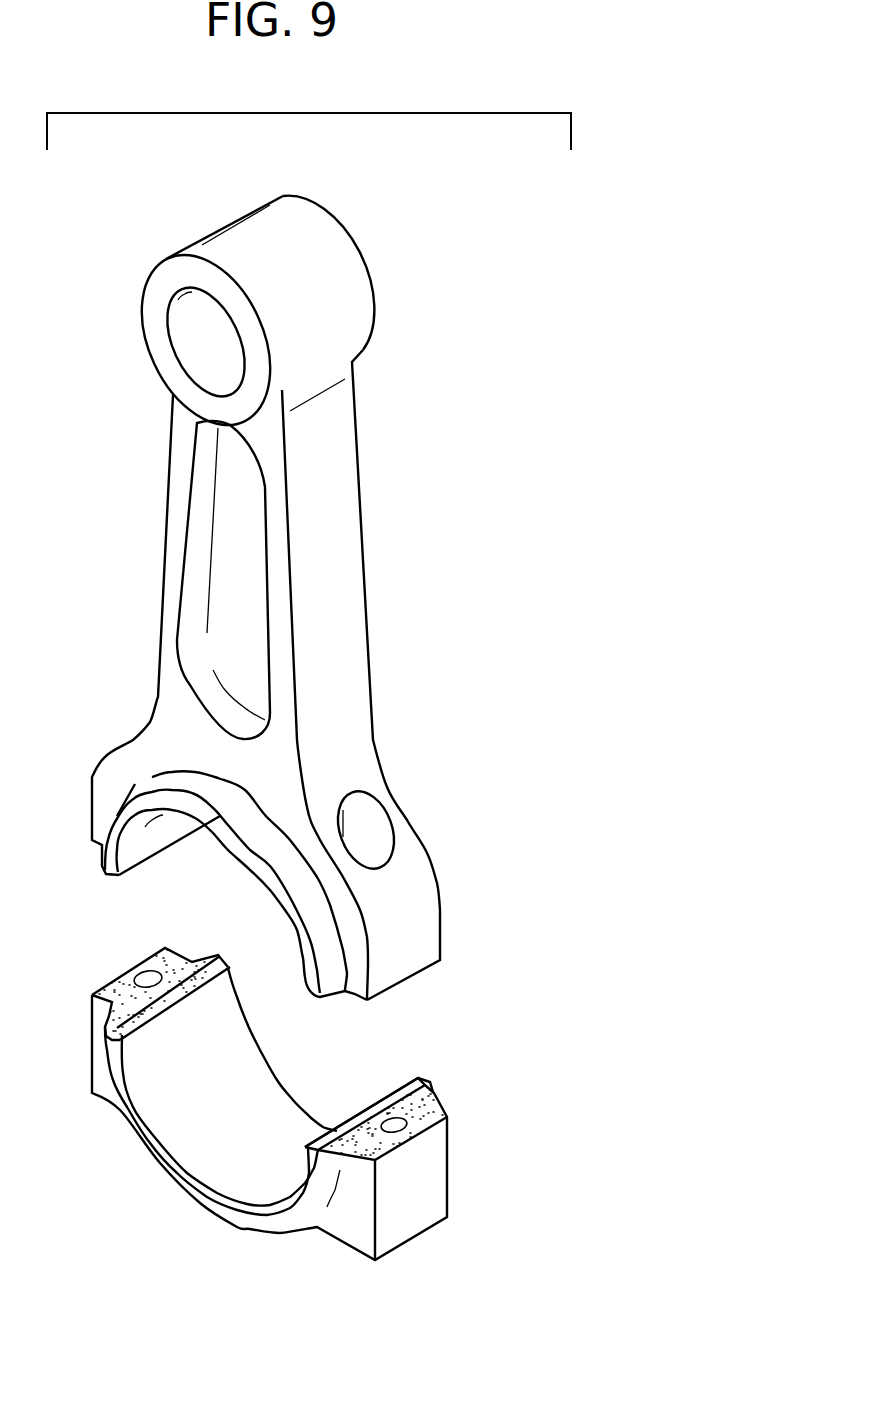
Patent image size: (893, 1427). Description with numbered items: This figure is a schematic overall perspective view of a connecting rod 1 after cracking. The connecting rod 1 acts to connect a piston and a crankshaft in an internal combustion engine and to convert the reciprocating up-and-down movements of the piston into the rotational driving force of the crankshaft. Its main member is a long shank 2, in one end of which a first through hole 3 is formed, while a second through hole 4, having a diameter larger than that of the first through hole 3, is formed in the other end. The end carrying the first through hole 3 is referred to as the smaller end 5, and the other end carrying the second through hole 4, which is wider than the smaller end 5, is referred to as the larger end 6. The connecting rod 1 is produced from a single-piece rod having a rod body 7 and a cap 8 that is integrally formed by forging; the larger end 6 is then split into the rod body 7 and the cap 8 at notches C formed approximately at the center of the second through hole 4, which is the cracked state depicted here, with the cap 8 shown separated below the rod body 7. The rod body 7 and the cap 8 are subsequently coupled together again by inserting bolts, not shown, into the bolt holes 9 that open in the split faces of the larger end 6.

The connecting rod 1 is at (452, 196).
The shank 2 is at (337, 610).
The first through hole 3 is at (184, 338).
The second through hole 4 is at (303, 934).
The smaller end 5 is at (357, 310).
The larger end 6 is at (358, 1220).
The rod body 7 is at (146, 682).
The cap 8 is at (107, 1087).
The bolt holes 9 is at (380, 827).
The notches C is at (155, 1012).